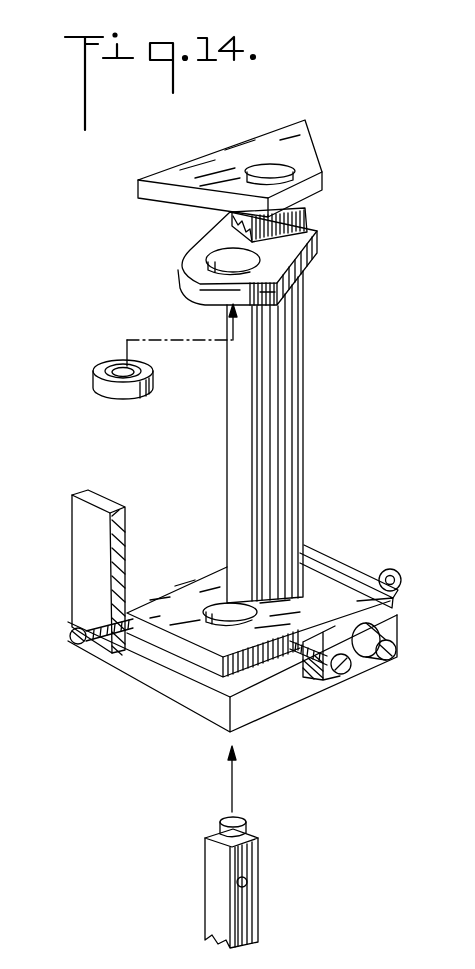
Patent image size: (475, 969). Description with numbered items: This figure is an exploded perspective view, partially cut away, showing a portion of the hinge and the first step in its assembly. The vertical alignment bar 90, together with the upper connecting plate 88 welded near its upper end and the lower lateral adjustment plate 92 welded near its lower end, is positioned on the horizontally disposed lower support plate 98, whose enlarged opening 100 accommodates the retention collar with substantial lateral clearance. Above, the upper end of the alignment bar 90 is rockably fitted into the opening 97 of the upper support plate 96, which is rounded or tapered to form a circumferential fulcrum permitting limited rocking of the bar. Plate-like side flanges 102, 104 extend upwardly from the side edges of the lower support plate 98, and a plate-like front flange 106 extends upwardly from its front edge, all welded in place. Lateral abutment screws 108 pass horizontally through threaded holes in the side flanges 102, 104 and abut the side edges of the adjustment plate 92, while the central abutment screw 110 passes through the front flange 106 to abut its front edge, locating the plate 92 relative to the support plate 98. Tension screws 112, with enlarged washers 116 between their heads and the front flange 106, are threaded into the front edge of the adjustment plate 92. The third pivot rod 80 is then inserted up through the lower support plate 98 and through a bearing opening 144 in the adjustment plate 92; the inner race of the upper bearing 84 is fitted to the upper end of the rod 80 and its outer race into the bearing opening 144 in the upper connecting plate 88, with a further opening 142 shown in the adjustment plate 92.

The third pivot rod 80 is at (261, 868).
The upper bearing 84 is at (152, 380).
The upper plate 88 is at (313, 260).
The vertical alignment bar 90 is at (298, 392).
The lateral adjustment plate 92 is at (185, 580).
The upper support plate 96 is at (308, 152).
The opening 97 is at (263, 165).
The lower support plate 98 is at (193, 703).
The enlarged opening 100 is at (198, 668).
The side flange 102 is at (85, 557).
The side flange 104 is at (353, 580).
The front flange 106 is at (358, 663).
The lateral abutment screw 108 is at (73, 641).
The central abutment screw 110 is at (345, 673).
The tension screw 112 is at (394, 654).
The enlarged washer 116 is at (387, 628).
The hole 142 is at (205, 614).
The bearing opening 144 is at (215, 266).